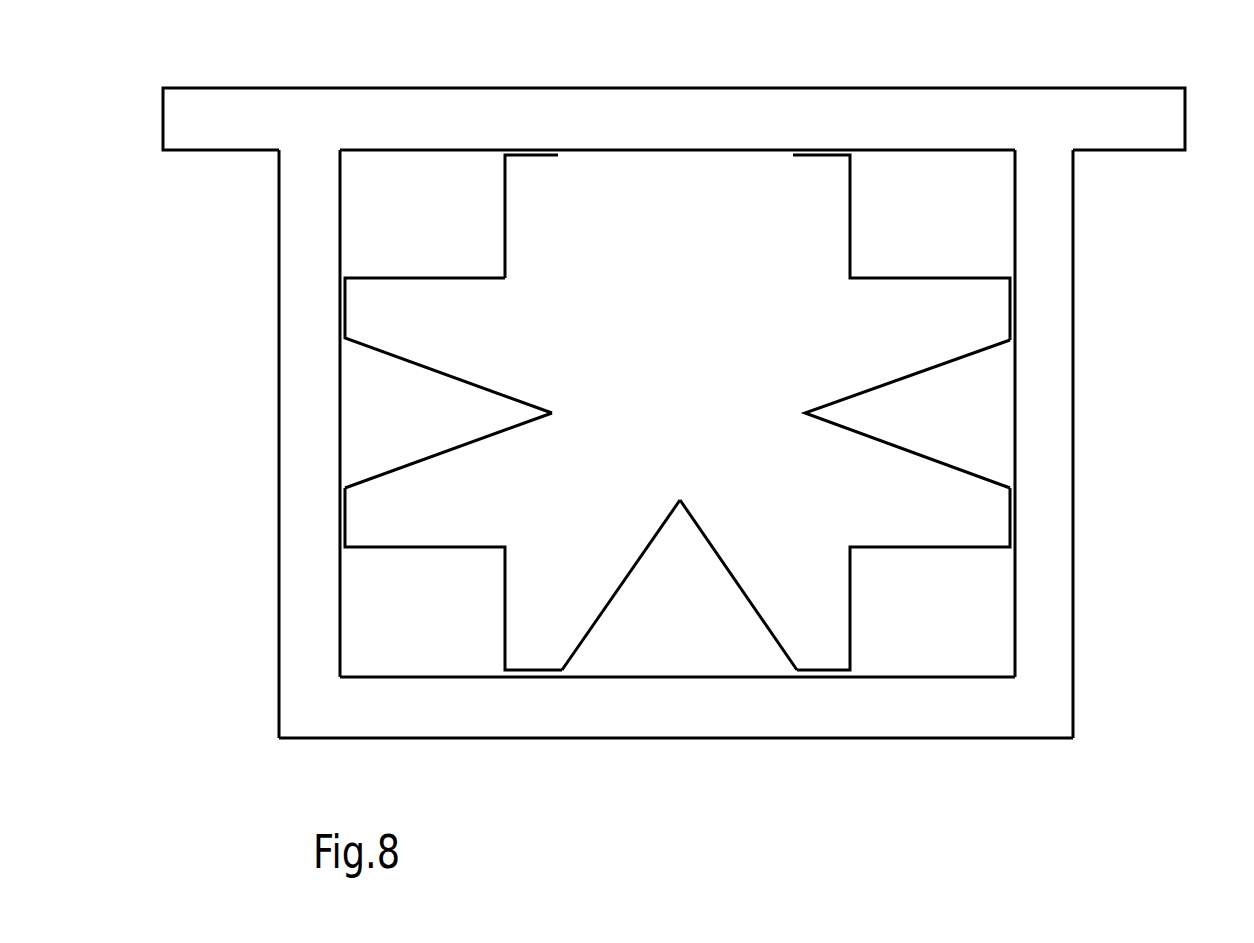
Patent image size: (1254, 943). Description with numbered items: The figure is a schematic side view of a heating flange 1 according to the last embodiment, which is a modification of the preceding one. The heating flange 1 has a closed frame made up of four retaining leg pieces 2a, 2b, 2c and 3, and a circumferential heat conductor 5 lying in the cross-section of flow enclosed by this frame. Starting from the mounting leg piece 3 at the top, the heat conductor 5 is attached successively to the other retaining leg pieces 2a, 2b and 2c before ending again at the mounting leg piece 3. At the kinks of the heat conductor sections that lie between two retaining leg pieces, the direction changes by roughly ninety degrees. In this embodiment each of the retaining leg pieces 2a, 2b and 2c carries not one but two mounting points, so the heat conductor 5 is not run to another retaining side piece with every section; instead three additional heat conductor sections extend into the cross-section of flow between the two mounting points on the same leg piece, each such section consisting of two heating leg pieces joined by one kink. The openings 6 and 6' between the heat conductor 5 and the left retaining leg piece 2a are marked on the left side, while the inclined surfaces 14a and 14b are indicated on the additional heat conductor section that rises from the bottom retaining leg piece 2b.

The housing 1 is at (701, 443).
The retaining leg piece 2a is at (290, 465).
The retaining leg piece 2b is at (687, 720).
The retaining leg piece 2c is at (1063, 467).
The mounting leg piece 3 is at (1185, 115).
The heat conductor 5 is at (616, 413).
The upper opening 6 is at (388, 345).
The lower opening 6' is at (387, 476).
The inclined surface 14a is at (853, 550).
The inclined surface 14b is at (680, 502).